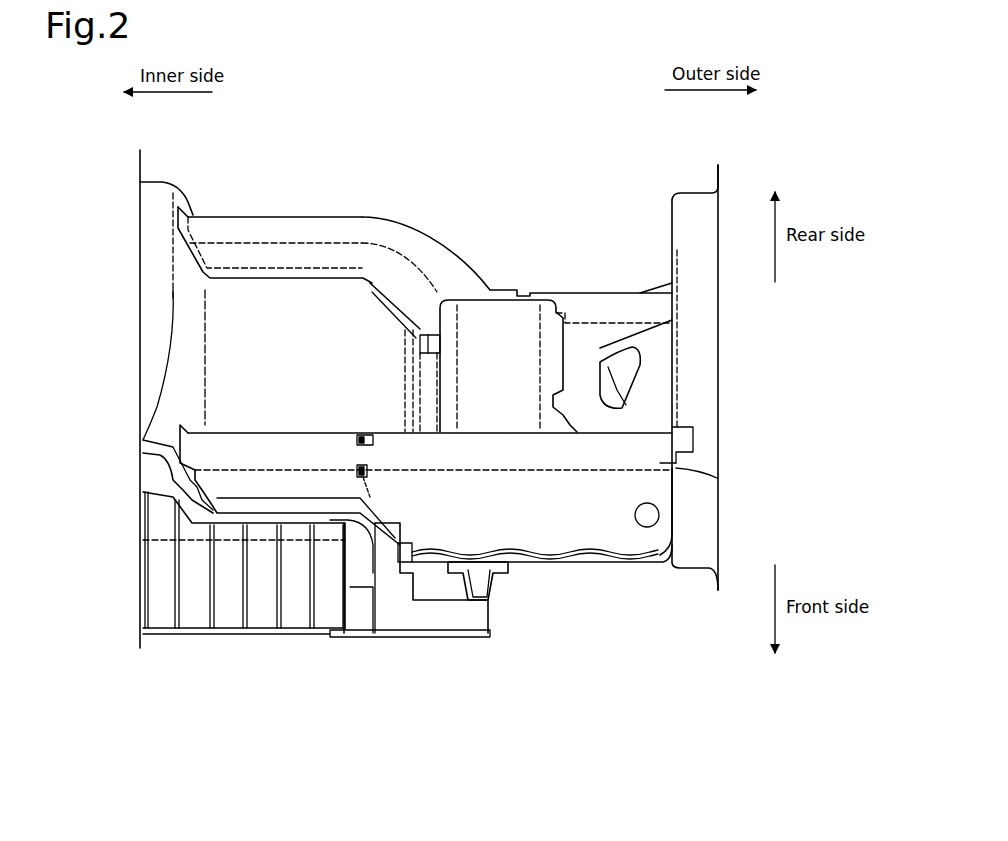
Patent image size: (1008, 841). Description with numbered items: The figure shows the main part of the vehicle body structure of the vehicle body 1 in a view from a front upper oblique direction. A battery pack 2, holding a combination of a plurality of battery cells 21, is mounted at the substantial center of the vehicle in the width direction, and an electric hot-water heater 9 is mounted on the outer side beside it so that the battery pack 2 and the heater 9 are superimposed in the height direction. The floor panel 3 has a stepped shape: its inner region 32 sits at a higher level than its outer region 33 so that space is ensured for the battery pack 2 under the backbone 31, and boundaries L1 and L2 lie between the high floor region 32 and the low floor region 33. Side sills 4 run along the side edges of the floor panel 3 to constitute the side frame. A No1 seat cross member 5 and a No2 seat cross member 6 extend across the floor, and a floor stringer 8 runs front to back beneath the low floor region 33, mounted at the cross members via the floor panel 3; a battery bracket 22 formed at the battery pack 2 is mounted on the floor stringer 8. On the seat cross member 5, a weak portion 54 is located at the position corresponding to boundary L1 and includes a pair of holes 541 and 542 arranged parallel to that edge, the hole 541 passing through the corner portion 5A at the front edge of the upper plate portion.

The vehicle body 1 is at (501, 108).
The battery pack 2 is at (226, 648).
The battery cells 21 is at (298, 613).
The battery bracket 22 is at (427, 625).
The floor panel 3 is at (602, 562).
The backbone 31 is at (158, 180).
The inner region 32 is at (255, 295).
The outer region 33 is at (643, 373).
The side sill 4 is at (707, 337).
The No1 seat cross member 5 is at (577, 528).
The corner portion 5A is at (247, 473).
The weak portion 54 is at (360, 368).
The hole 541 is at (360, 468).
The hole 542 is at (360, 440).
The No2 seat cross member 6 is at (383, 233).
The floor stringer 8 is at (478, 603).
The electric hot-water heater 9 is at (523, 325).
The boundary L1 is at (375, 295).
The boundary L2 is at (420, 437).